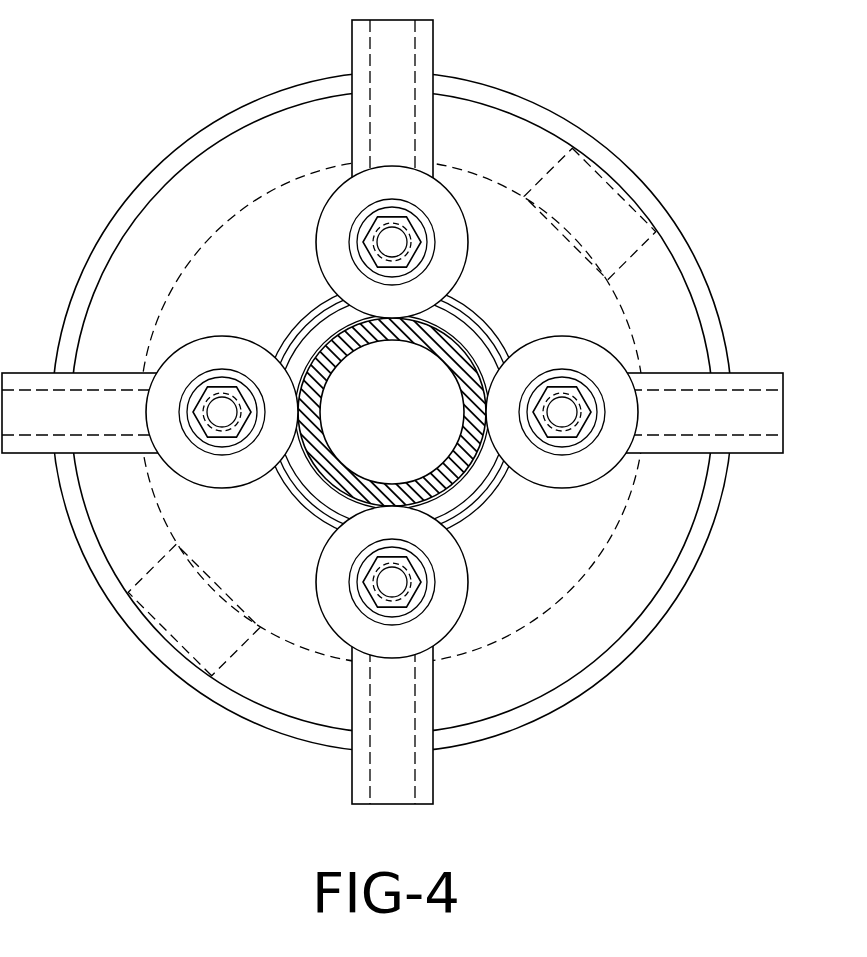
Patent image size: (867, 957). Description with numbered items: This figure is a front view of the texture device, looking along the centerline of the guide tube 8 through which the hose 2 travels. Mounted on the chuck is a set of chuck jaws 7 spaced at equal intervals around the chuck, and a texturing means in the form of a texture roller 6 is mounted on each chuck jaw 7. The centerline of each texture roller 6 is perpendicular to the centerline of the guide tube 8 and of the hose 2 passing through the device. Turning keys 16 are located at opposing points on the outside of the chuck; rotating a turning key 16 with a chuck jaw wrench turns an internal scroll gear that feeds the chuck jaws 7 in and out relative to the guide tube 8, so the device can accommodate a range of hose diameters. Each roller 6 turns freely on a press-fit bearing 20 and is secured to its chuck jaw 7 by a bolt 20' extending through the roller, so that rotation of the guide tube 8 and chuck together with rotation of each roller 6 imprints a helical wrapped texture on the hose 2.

The hose 2 is at (340, 364).
The texture roller 6 is at (318, 272).
The chuck jaw 7 is at (752, 373).
The guide tube 8 is at (471, 335).
The turning key 16 is at (590, 203).
The press-fit bearing 20 is at (607, 460).
The bolt 20' is at (446, 569).